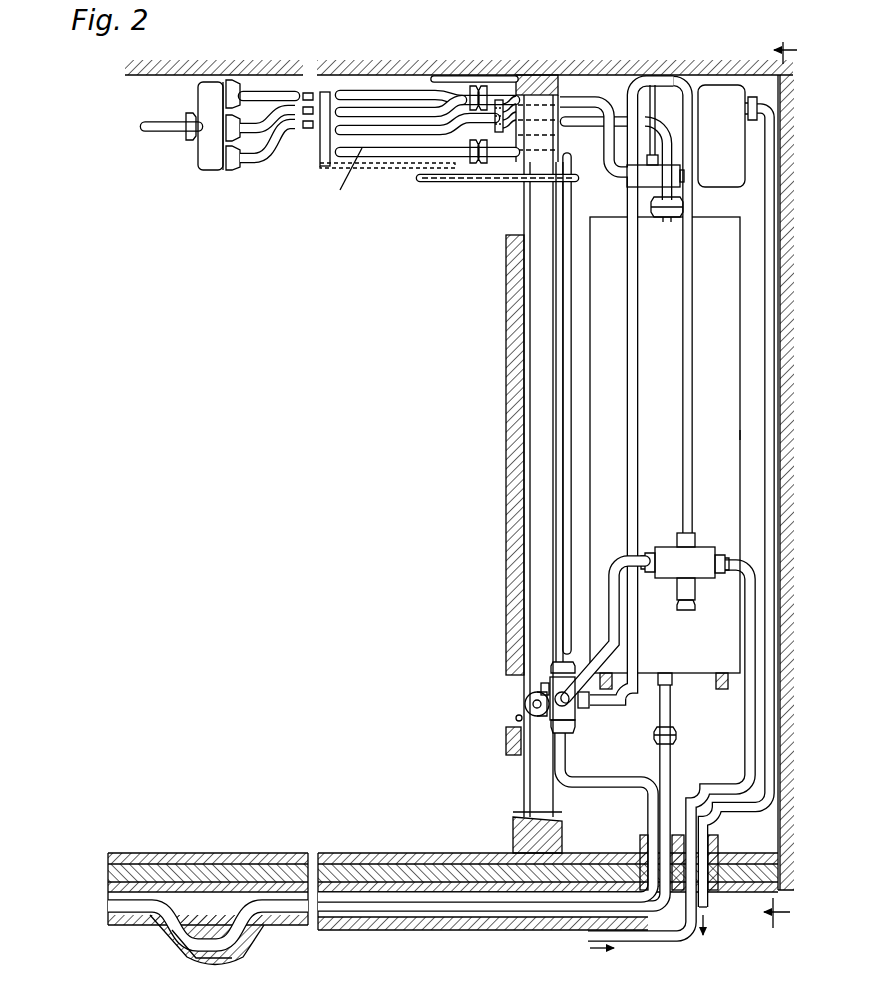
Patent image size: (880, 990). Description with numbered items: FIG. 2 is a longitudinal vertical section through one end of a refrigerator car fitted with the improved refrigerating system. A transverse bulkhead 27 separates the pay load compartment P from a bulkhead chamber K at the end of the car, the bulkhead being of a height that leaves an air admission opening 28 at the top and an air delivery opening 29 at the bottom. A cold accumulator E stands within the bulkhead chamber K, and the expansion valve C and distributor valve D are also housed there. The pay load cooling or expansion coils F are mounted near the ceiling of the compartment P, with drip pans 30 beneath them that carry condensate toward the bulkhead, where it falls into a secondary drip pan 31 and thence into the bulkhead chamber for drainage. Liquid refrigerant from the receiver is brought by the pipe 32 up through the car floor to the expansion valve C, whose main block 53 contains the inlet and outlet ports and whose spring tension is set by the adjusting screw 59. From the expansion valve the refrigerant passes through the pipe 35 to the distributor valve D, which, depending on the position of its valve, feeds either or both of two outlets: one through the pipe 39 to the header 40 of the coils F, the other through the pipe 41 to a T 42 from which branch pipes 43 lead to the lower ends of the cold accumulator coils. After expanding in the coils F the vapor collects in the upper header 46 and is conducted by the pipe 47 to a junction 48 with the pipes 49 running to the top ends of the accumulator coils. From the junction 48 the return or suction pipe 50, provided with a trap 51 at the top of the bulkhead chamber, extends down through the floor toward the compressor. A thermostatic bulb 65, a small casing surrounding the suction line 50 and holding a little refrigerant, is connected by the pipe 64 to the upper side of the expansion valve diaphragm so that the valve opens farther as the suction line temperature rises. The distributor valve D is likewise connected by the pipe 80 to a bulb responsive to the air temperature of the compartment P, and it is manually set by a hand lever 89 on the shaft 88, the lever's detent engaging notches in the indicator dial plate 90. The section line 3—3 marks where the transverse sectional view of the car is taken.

The section line 3 is at (780, 484).
The transverse bulkhead 27 is at (506, 362).
The air admission opening 28 is at (518, 234).
The air delivery opening 29 is at (521, 783).
The drip pans 30 is at (389, 167).
The secondary drip pan 31 is at (463, 183).
The pipe 32 is at (756, 583).
The pipe 35 is at (626, 562).
The pipe 39 is at (563, 642).
The header 40 is at (494, 112).
The pipe 41 is at (594, 784).
The T 42 is at (205, 940).
The branch pipes 43 is at (115, 908).
The upper header 46 is at (506, 95).
The pipe 47 is at (507, 120).
The junction 48 is at (214, 152).
The pipes 49 is at (303, 106).
The suction pipe 50 is at (276, 93).
The trap 51 is at (727, 136).
The main block 53 is at (672, 568).
The adjusting screw 59 is at (690, 611).
The pipe 64 is at (686, 122).
The thermostatic bulb 65 is at (632, 178).
The pipe 80 is at (470, 78).
The shaft 88 is at (526, 706).
The hand lever 89 is at (517, 720).
The indicator dial plate 90 is at (540, 689).
The expansion valve C is at (700, 553).
The distributor valve D is at (578, 716).
The cold accumulator E is at (665, 453).
The expansion coils F is at (345, 179).
The bulkhead chamber K is at (757, 280).
The pay load compartment P is at (267, 461).